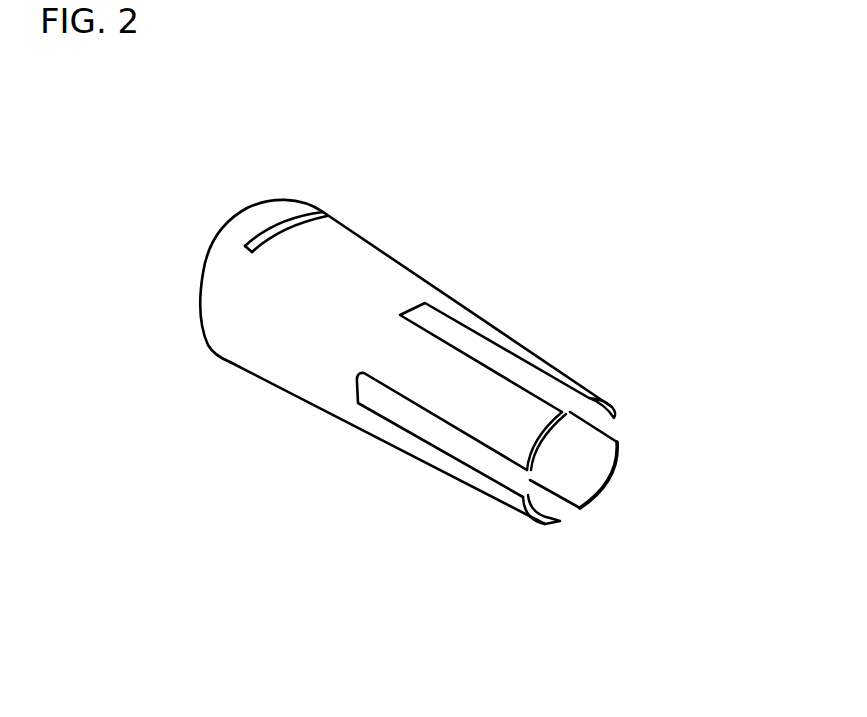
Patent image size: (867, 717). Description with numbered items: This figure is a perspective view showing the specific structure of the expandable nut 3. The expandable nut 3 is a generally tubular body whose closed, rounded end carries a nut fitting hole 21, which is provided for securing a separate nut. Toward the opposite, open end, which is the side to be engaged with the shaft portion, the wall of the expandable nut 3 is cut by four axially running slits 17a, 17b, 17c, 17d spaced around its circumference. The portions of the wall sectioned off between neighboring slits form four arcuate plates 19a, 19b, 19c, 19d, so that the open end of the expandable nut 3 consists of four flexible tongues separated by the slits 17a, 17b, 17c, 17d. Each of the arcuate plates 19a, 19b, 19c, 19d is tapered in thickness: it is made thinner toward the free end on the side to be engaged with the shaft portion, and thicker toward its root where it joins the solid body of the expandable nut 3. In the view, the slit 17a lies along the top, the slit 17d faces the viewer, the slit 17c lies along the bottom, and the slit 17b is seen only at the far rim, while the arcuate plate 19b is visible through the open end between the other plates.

The expandable nut 3 is at (170, 174).
The nut fitting hole 21 is at (323, 203).
The slit 17a is at (480, 358).
The slit 17b is at (619, 422).
The slit 17c is at (572, 520).
The slit 17d is at (440, 432).
The arcuate plate 19a is at (555, 368).
The arcuate plate 19b is at (610, 483).
The arcuate plate 19c is at (477, 497).
The arcuate plate 19d is at (382, 377).